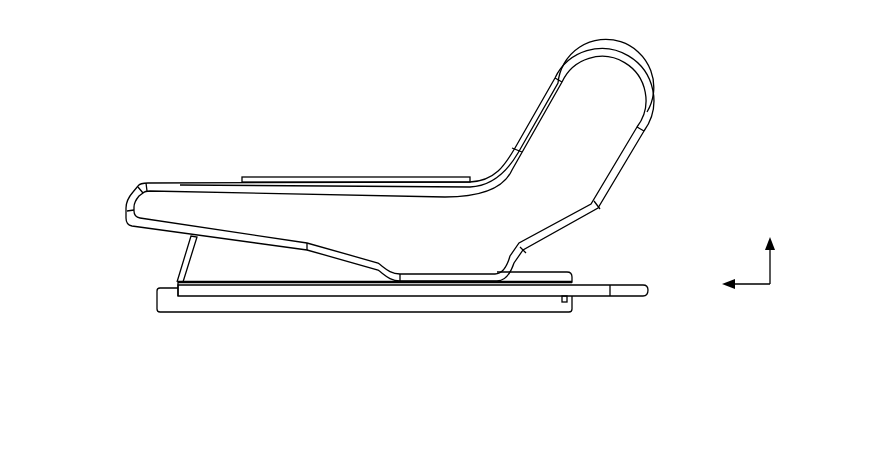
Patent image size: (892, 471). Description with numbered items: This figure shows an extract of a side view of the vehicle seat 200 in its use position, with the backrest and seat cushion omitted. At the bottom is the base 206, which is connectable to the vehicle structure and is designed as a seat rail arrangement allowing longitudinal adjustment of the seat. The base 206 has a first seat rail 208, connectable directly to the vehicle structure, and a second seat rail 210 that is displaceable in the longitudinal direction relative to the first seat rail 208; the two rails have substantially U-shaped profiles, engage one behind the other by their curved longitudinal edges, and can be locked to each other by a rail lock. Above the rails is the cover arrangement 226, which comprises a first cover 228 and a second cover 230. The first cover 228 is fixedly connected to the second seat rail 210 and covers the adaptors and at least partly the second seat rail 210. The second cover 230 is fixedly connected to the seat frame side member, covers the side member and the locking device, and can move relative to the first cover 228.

The vehicle seat 200 is at (190, 92).
The base 206 is at (136, 300).
The first seat rail 208 is at (260, 306).
The second seat rail 210 is at (605, 292).
The cover arrangement 226 is at (320, 130).
The first cover 228 is at (328, 272).
The second cover 230 is at (416, 210).